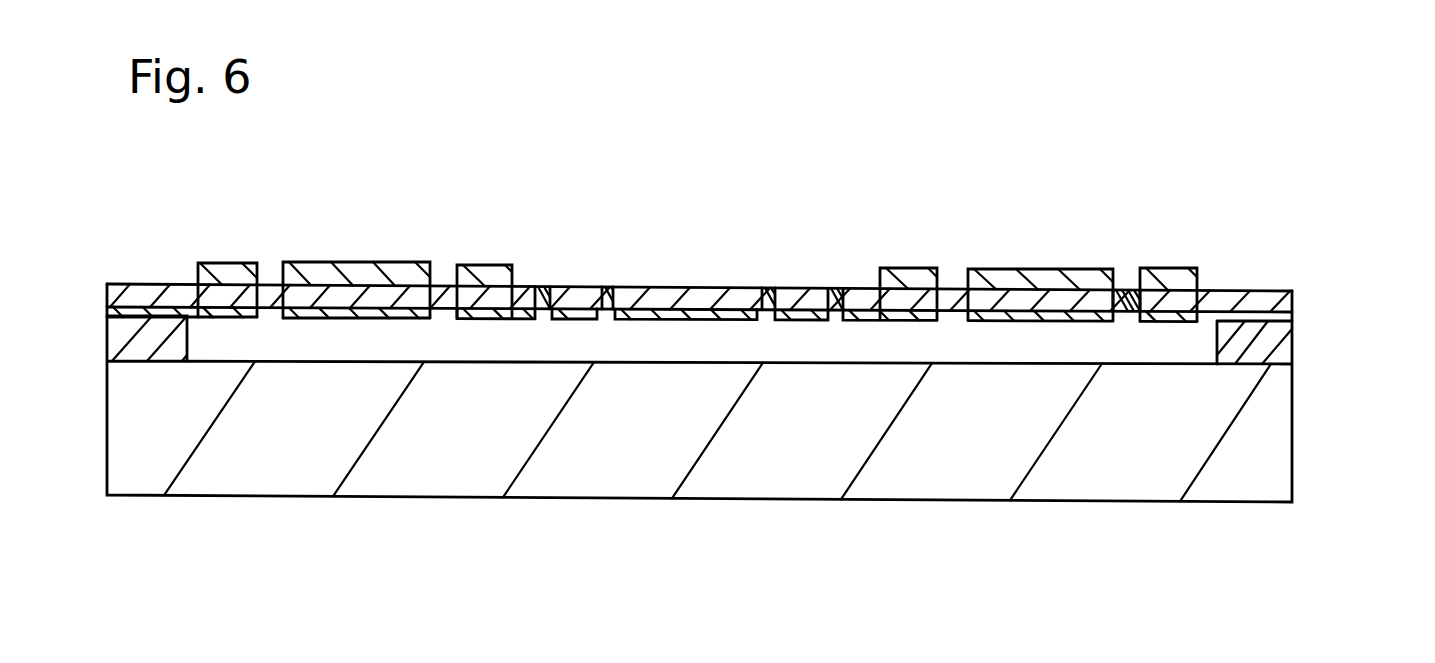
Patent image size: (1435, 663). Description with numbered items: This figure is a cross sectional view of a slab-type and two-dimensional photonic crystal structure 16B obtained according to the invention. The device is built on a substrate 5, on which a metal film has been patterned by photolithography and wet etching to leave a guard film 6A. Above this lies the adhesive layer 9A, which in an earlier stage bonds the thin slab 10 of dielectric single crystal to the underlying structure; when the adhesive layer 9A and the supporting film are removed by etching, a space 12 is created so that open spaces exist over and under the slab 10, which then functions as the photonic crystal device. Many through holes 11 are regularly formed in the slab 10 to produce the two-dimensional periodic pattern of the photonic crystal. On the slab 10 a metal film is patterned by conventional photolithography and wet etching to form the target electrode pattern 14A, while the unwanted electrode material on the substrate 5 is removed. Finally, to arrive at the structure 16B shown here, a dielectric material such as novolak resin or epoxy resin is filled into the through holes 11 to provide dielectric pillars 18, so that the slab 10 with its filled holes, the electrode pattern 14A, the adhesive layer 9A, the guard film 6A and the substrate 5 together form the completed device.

The substrate 5 is at (1280, 457).
The guard film 6A is at (1280, 347).
The adhesive layer 9A is at (1293, 313).
The electrode pattern 14A is at (303, 263).
The slab 10 is at (1023, 298).
The dielectric pillars 18 is at (303, 308).
The space 12 is at (737, 308).
The through holes 11 is at (262, 292).
The slab-type and two-dimensional photonic crystal structure 16B is at (1289, 256).